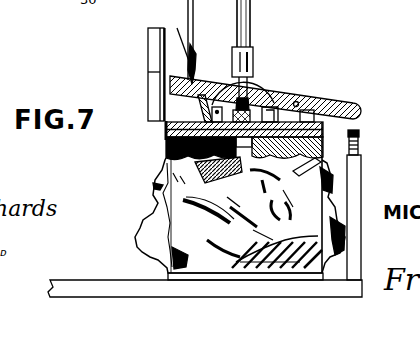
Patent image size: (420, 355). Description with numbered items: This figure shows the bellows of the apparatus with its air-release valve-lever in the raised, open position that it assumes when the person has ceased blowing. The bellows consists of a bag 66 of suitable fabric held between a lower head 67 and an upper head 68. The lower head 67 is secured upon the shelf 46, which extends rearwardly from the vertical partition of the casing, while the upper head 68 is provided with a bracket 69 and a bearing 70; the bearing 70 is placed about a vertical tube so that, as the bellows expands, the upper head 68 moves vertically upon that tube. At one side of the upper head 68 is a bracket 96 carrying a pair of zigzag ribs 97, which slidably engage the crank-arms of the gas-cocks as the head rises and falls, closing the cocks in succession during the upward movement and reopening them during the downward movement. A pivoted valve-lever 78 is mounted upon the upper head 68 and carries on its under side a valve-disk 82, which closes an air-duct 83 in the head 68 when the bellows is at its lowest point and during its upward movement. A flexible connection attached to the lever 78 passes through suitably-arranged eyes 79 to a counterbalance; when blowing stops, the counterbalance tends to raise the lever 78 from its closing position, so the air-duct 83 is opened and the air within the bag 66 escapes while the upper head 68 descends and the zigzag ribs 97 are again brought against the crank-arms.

The zigzag rib 97 is at (148, 52).
The bracket 96 is at (175, 35).
The eyes 79 is at (202, 42).
The bearing 70 is at (254, 52).
The bracket 69 is at (262, 74).
The valve-lever 78 is at (318, 104).
The valve-disk 82 is at (283, 92).
The air-duct 83 is at (165, 129).
The lower head 67 is at (268, 280).
The shelf 46 is at (115, 284).
The upper head 68 is at (360, 138).
The bag 66 is at (158, 192).